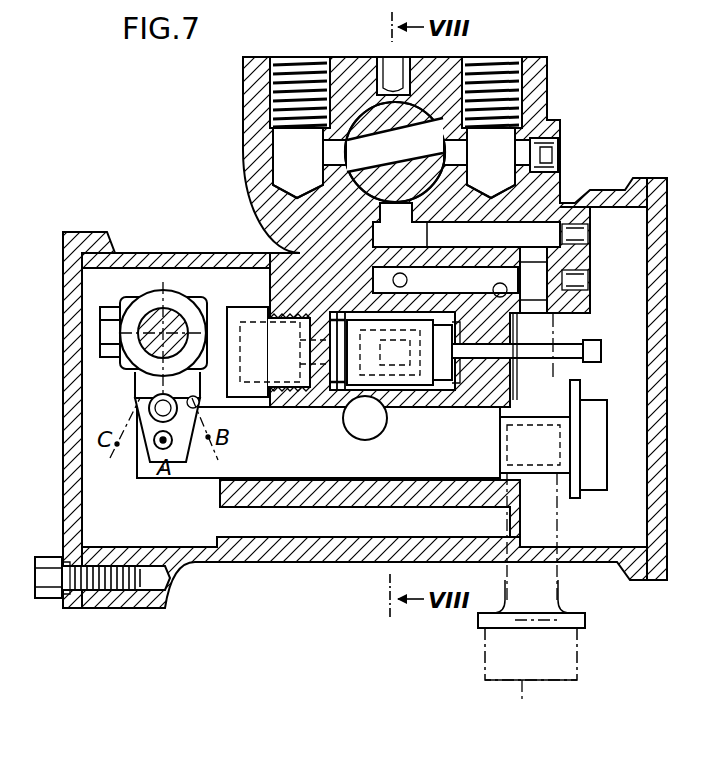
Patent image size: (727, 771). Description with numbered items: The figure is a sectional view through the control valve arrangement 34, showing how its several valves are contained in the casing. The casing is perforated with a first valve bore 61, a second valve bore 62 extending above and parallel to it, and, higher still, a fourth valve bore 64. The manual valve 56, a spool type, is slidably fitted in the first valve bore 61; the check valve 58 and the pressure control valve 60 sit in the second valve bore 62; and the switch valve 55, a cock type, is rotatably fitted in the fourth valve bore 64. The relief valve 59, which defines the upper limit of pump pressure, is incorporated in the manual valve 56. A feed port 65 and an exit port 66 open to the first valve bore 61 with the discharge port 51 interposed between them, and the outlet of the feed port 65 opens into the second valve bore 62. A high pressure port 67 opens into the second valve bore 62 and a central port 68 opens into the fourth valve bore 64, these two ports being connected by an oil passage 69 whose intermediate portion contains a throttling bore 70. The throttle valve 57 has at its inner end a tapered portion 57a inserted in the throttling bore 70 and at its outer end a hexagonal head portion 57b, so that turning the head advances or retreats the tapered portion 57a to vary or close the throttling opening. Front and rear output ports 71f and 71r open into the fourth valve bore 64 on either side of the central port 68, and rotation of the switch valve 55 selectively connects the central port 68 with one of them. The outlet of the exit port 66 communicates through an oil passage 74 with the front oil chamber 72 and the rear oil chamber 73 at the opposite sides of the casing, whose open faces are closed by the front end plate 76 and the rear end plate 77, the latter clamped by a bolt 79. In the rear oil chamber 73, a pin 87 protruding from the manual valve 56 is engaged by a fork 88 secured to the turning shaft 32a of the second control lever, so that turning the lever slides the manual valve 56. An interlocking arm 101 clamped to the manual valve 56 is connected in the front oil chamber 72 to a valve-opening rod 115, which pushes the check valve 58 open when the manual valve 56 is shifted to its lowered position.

The turning shaft 32a is at (149, 311).
The control valve arrangement 34 is at (569, 160).
The discharge port 51 is at (350, 423).
The switch valve 55 is at (351, 128).
The manual valve 56 is at (282, 453).
The throttle valve 57 is at (558, 591).
The tapered portion 57a is at (520, 268).
The hexagonal head portion 57b is at (531, 672).
The check valve 58 is at (377, 361).
The relief valve 59 is at (495, 464).
The pressure control valve 60 is at (292, 361).
The first valve bore 61 is at (361, 481).
The second valve bore 62 is at (343, 318).
The fourth valve bore 64 is at (430, 131).
The feed port 65 is at (462, 388).
The exit port 66 is at (265, 503).
The high pressure port 67 is at (406, 282).
The central port 68 is at (398, 224).
The oil passage 69 is at (497, 270).
The throttling bore 70 is at (551, 257).
The front output port 71f is at (457, 148).
The rear output port 71r is at (331, 160).
The front oil chamber 72 is at (626, 536).
The rear oil chamber 73 is at (123, 530).
The oil passage 74 is at (251, 538).
The front end plate 76 is at (661, 335).
The rear end plate 77 is at (64, 346).
The bolt 79 is at (45, 580).
The pin 87 is at (156, 463).
The fork 88 is at (133, 392).
The interlocking arm 101 is at (581, 384).
The valve-opening rod 115 is at (597, 351).